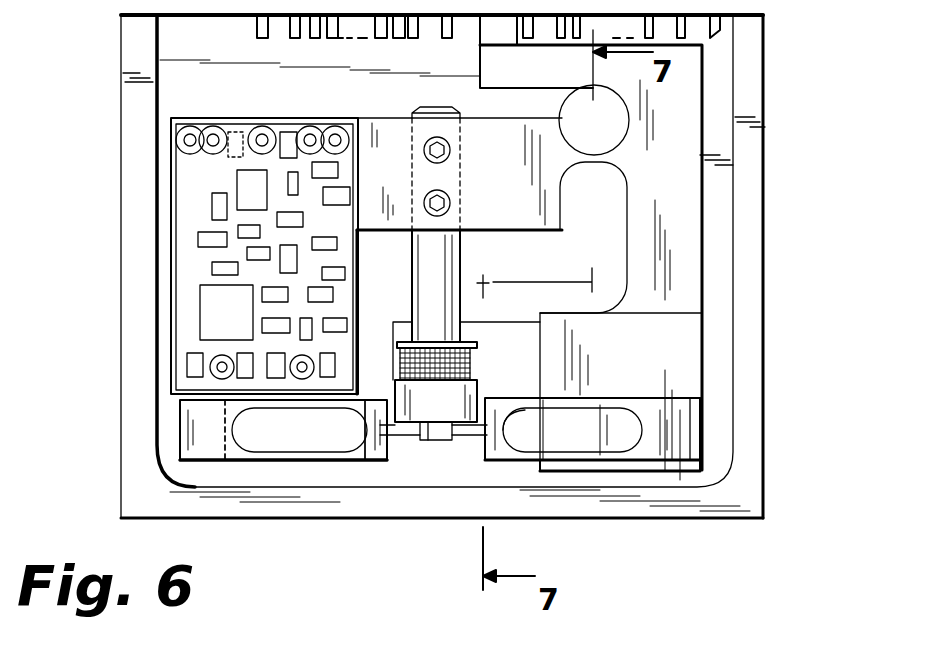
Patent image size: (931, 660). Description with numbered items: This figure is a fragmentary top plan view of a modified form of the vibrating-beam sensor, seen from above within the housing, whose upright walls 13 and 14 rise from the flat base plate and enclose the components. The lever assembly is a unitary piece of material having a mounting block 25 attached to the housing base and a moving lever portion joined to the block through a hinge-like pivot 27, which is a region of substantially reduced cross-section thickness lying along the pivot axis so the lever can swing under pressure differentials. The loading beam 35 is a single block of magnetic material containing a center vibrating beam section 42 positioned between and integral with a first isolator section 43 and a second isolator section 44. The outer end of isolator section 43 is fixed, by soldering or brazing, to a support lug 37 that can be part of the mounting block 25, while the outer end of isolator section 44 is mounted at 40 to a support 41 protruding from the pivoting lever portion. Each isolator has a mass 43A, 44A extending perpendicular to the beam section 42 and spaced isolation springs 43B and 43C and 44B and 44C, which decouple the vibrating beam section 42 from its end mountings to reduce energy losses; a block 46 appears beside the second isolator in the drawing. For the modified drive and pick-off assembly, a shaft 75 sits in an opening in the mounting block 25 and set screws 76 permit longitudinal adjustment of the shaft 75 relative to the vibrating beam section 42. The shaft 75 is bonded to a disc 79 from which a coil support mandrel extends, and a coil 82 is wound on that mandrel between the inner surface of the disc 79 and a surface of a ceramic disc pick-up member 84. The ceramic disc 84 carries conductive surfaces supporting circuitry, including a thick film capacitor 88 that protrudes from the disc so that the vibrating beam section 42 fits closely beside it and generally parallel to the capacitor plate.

The upright wall 13 is at (133, 207).
The upright wall 14 is at (617, 510).
The mounting block 25 is at (392, 184).
The hinge-like pivot 27 is at (600, 165).
The loading beam 35 is at (585, 457).
The support lug 37 is at (182, 470).
The mounting 40 is at (680, 422).
The support 41 is at (703, 462).
The center vibrating beam section 42 is at (405, 433).
The first isolator section 43 is at (322, 460).
The mass 43A is at (367, 458).
The isolation spring 43B is at (273, 402).
The isolation spring 43C is at (283, 455).
The second isolator section 44 is at (642, 410).
The mass 44A is at (522, 395).
The isolation spring 44B is at (597, 402).
The isolation spring 44C is at (560, 470).
The support block 46 is at (568, 337).
The shaft 75 is at (453, 252).
The set screws 76 is at (447, 197).
The disc 79 is at (478, 342).
The coil 82 is at (468, 360).
The ceramic disc pick-up member 84 is at (450, 416).
The thick film capacitor 88 is at (440, 437).